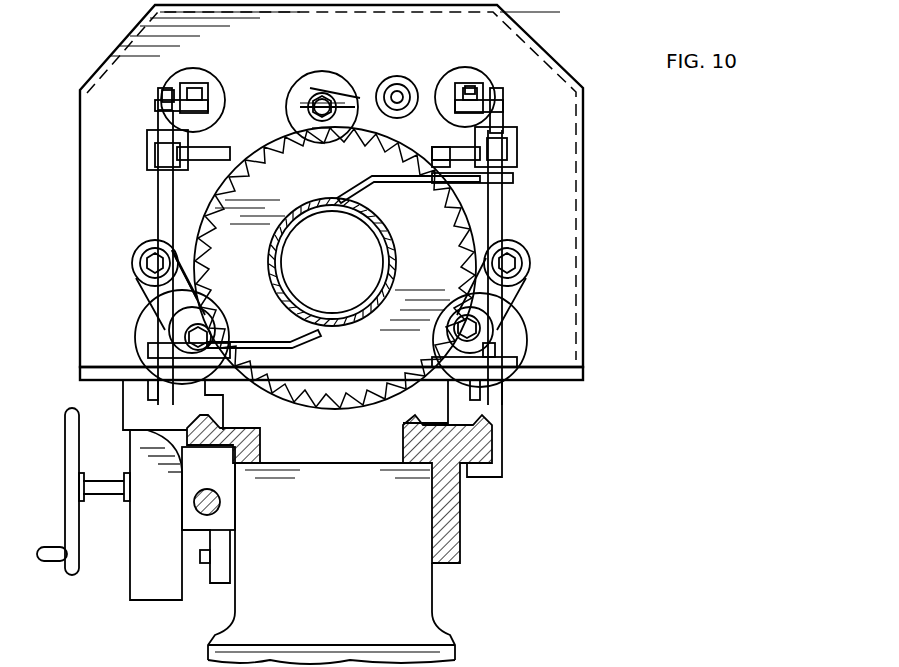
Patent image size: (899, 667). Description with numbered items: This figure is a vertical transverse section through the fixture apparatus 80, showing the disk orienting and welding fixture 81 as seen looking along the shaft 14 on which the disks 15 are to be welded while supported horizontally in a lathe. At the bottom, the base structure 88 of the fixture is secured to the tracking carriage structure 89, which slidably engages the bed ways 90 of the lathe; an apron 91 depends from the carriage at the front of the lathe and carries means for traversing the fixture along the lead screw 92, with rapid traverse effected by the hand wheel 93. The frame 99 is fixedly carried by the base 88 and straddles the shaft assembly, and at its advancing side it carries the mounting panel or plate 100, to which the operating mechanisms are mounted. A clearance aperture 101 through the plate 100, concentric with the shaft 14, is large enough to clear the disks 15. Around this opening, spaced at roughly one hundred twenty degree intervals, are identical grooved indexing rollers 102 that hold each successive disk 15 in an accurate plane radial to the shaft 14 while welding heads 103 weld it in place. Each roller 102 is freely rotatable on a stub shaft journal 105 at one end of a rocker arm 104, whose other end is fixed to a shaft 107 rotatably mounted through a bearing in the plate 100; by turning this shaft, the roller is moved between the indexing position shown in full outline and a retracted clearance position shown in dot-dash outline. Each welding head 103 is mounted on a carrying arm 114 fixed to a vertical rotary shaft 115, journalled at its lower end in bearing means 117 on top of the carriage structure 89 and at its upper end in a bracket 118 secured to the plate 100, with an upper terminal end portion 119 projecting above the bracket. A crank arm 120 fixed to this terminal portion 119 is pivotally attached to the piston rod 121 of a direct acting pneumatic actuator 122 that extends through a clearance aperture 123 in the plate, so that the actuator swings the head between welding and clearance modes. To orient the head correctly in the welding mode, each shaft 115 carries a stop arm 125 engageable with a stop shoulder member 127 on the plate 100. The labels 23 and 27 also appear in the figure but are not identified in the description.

The fixture apparatus 80 is at (98, 58).
The disk orienting and welding fixture 81 is at (103, 118).
The base structure 88 is at (78, 372).
The tracking carriage structure 89 is at (130, 418).
The bed ways 90 is at (403, 447).
The apron 91 is at (128, 578).
The lead screw 92 is at (222, 500).
The hand wheel 93 is at (62, 528).
The frame 99 is at (135, 68).
The mounting panel or plate 100 is at (300, 32).
The clearance aperture 101 is at (252, 170).
The grooved indexing rollers 102 is at (323, 70).
The welding heads 103 is at (370, 176).
The rocker arm 104 is at (380, 85).
The stub shaft journal 105 is at (298, 100).
The shaft 107 is at (433, 76).
The carrying arm 114 is at (468, 183).
The vertical rotary shaft 115 is at (158, 208).
The bearing means 117 is at (510, 385).
The bracket 118 is at (517, 135).
The upper terminal end portion 119 is at (157, 94).
The crank arm 120 is at (158, 110).
The piston rod 121 is at (503, 92).
The direct acting pneumatic actuator 122 is at (207, 88).
The clearance aperture 123 is at (203, 80).
The stop arm 125 is at (192, 145).
The stop shoulder member 127 is at (255, 148).
The cable 23 is at (212, 198).
The ring 27 is at (268, 246).
The shaft 14 is at (292, 256).
The disks 15 is at (428, 254).